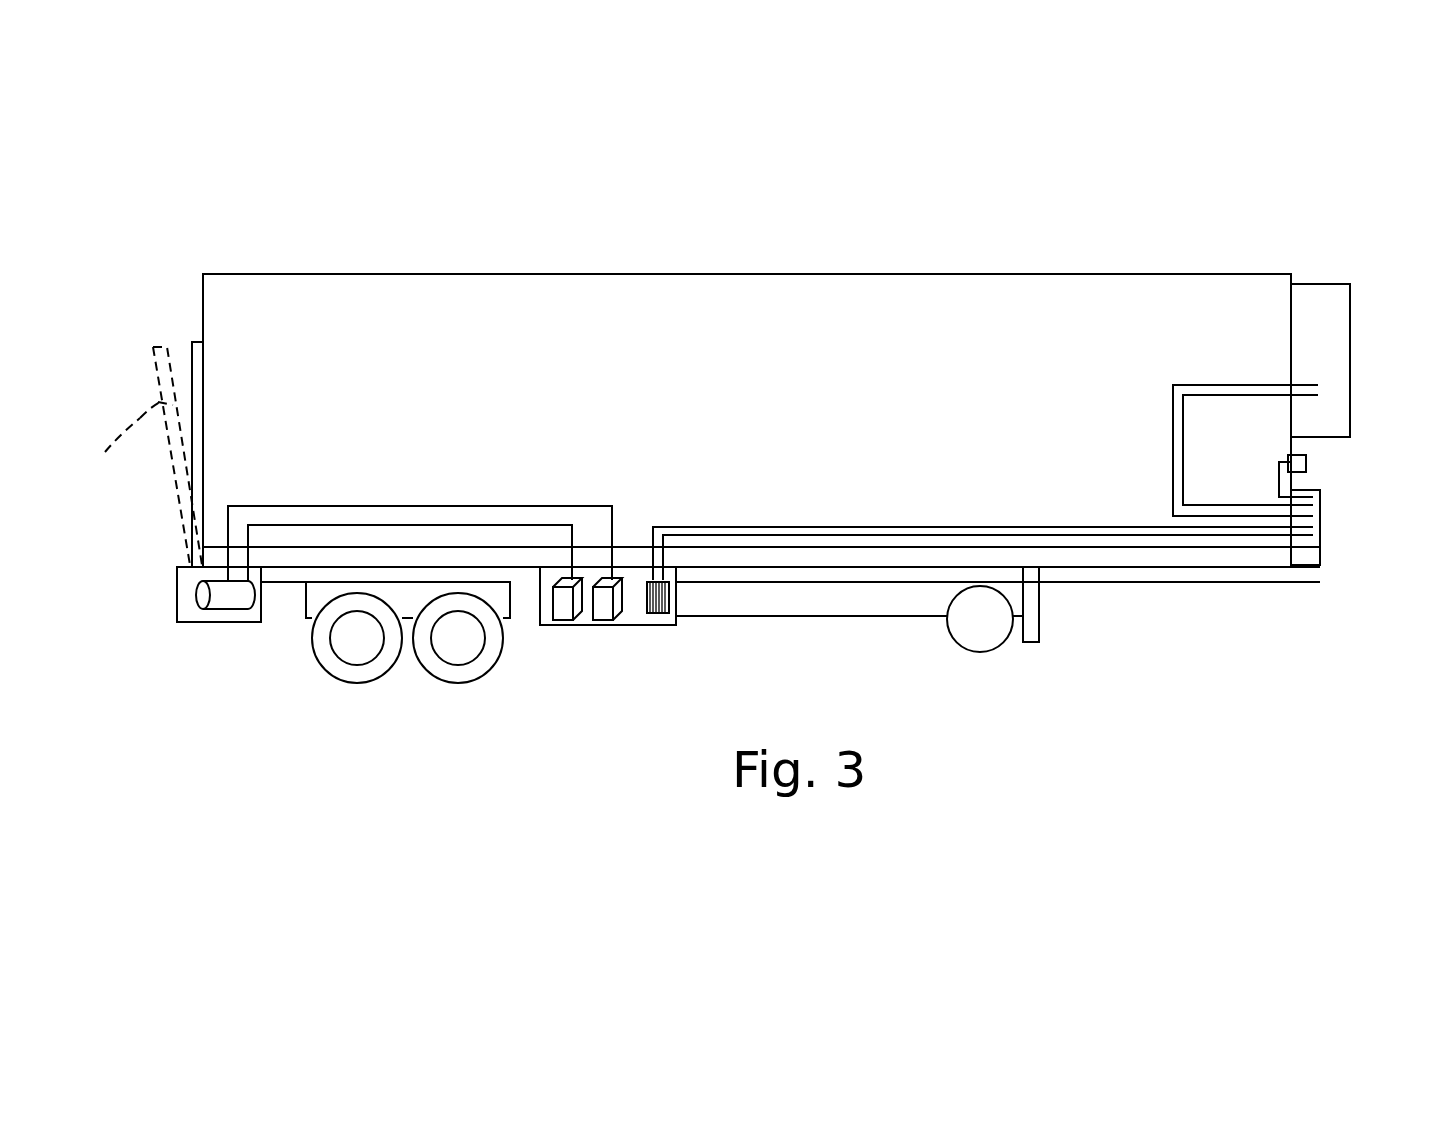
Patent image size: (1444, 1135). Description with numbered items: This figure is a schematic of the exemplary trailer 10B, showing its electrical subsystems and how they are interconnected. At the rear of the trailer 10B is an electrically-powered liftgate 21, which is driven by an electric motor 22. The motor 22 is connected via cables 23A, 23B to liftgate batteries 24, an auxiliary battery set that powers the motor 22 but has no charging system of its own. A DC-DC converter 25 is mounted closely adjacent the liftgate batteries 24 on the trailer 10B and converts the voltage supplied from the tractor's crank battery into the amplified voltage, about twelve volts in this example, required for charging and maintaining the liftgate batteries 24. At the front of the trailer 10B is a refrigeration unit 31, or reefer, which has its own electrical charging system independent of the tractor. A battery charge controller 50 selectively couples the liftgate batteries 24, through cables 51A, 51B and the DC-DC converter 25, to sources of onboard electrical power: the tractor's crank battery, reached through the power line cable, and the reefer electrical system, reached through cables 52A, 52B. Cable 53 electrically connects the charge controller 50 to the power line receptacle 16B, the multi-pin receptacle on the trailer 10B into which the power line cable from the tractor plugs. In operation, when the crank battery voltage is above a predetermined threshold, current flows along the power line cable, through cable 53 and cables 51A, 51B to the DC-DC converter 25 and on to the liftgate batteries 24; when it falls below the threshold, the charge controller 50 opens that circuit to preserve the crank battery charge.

The trailer 10B is at (656, 236).
The liftgate 21 is at (197, 418).
The electric motor 22 is at (232, 612).
The cable 23A is at (451, 502).
The cable 23B is at (520, 545).
The liftgate batteries 24 is at (557, 620).
The DC-DC converter 25 is at (658, 625).
The refrigeration unit 31 is at (1340, 323).
The battery charge controller 50 is at (1320, 527).
The cable 51A is at (895, 525).
The cable 51B is at (1023, 533).
The cable 52A is at (1247, 383).
The cable 52B is at (1195, 395).
The cable 53 is at (1277, 488).
The multi-pin receptacle 16B is at (1306, 465).